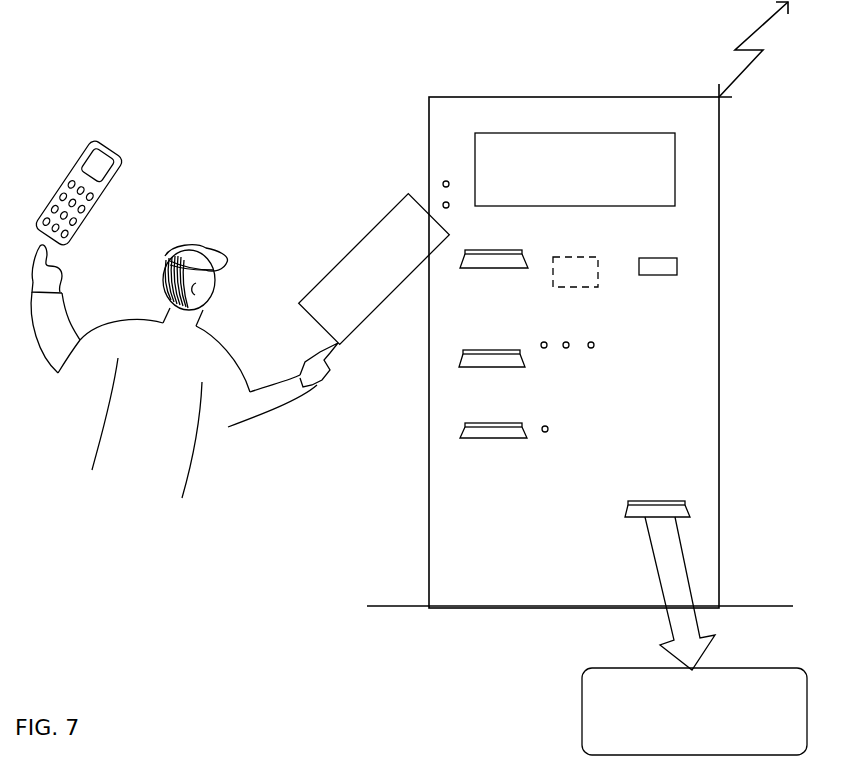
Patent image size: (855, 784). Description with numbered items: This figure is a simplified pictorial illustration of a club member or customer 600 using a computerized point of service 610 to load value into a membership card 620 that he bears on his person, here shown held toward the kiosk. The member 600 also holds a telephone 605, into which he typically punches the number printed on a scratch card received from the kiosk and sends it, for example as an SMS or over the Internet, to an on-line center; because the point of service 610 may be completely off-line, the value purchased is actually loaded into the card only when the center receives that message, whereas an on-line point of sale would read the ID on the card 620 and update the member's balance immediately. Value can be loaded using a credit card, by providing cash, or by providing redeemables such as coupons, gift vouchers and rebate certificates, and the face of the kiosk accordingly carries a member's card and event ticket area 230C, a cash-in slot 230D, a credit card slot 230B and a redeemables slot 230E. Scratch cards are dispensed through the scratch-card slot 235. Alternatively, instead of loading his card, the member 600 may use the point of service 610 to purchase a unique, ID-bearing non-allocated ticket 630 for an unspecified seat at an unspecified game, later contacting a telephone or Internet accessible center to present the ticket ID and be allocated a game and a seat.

The club member 600 is at (228, 430).
The telephone 605 is at (112, 196).
The computerized point of service 610 is at (538, 97).
The membership card 620 is at (362, 241).
The credit card slot 230B is at (525, 367).
The member's card / event ticket slot 230C is at (598, 262).
The cash in slot 230D is at (528, 268).
The redeemables slot 230E is at (463, 426).
The scratch-card slot 235 is at (690, 508).
The non-allocated ticket 630 is at (582, 670).